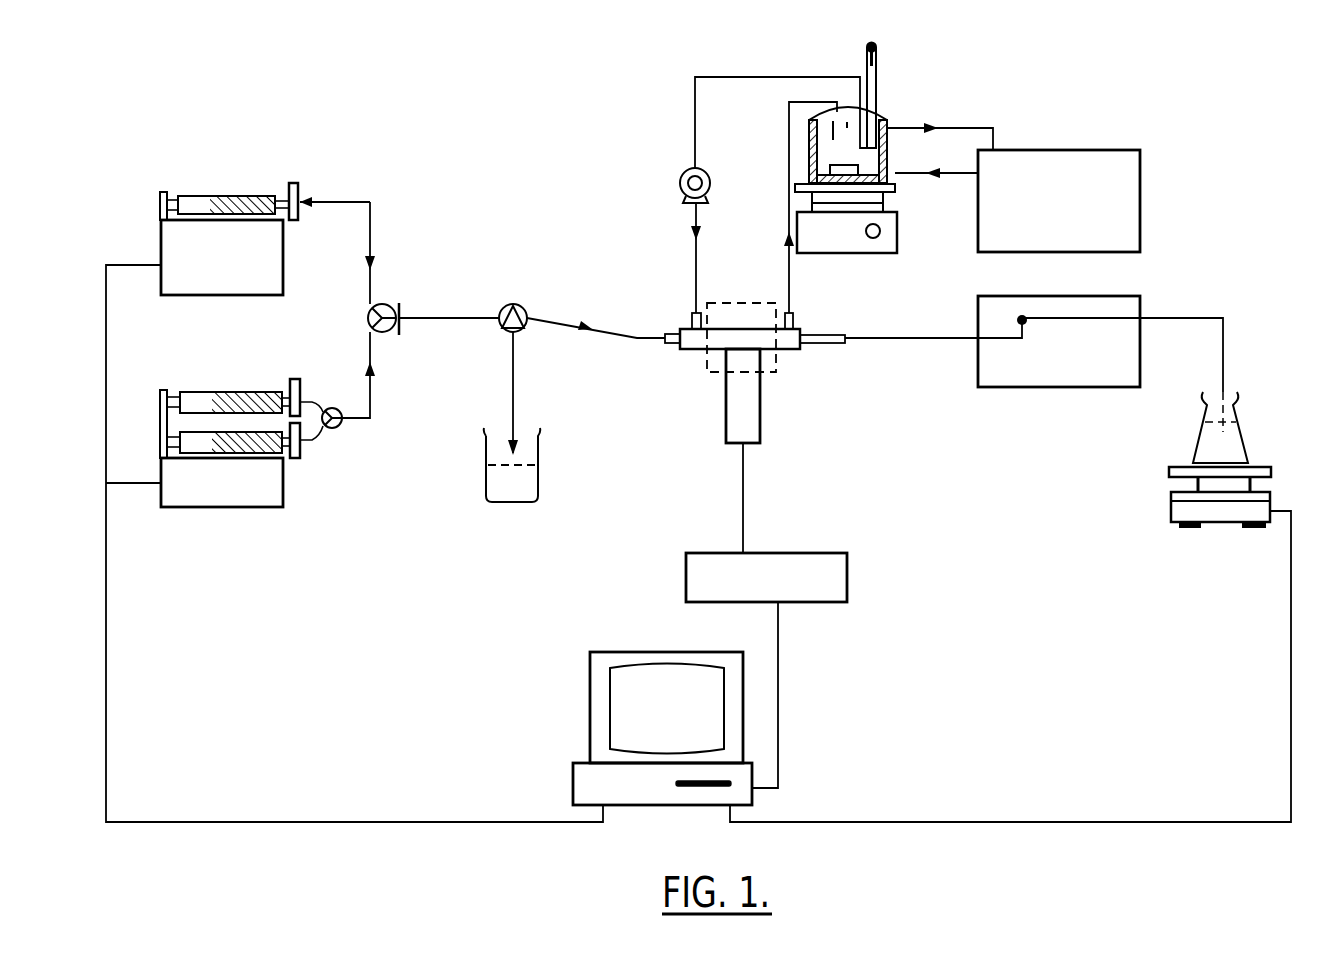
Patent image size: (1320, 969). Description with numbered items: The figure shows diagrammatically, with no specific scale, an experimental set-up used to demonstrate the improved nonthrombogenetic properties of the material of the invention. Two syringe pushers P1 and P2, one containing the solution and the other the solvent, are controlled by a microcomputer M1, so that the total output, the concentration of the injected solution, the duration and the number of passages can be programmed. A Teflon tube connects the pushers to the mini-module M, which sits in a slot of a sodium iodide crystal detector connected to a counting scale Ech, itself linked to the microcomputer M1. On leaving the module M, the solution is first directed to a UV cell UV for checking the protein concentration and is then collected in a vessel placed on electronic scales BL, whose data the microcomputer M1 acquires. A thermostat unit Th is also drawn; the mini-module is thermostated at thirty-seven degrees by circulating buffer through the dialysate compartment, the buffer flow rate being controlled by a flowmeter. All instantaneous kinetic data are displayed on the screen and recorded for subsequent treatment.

The syringe pusher P1 is at (229, 239).
The syringe pusher P2 is at (251, 443).
The mini-module M is at (755, 371).
The thermostat Th is at (1059, 201).
The UV cell UV is at (1059, 341).
The electronic scales BL is at (1240, 459).
The counting scale Ech is at (766, 577).
The microcomputer M1 is at (662, 728).